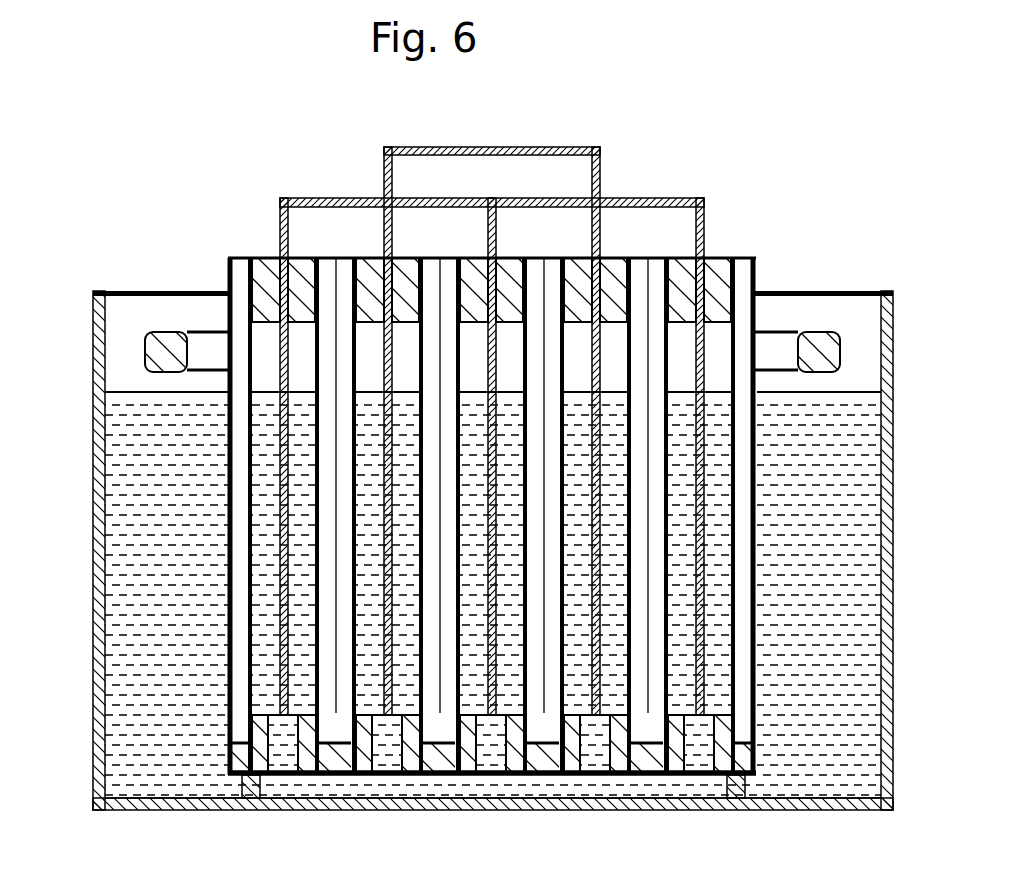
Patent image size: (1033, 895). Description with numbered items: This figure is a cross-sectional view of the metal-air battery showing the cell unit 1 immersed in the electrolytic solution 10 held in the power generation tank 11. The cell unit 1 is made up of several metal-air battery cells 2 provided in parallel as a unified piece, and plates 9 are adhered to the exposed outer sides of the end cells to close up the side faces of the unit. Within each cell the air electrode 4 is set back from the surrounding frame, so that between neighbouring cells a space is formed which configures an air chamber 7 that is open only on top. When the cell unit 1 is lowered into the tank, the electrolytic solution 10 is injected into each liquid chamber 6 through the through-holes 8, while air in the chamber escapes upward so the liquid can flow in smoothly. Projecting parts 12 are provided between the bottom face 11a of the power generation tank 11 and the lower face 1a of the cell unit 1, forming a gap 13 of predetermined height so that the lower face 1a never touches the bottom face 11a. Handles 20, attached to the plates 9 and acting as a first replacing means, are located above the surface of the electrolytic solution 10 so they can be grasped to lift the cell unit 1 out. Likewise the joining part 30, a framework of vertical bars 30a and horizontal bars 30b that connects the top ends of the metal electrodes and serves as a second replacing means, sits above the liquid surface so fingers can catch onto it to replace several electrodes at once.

The cell unit 1 is at (632, 245).
The lower face of the cell unit 1a is at (425, 775).
The metal-air battery cell 2 is at (272, 265).
The air electrode 4 is at (243, 265).
The liquid chamber 6 is at (268, 650).
The air chamber 7 is at (333, 270).
The through-hole 8 is at (285, 742).
The plate 9 is at (228, 300).
The electrolytic solution 10 is at (868, 570).
The power generation tank 11 is at (893, 500).
The bottom face of the power generation tank 11a is at (366, 798).
The projecting part 12 is at (243, 789).
The gap 13 is at (610, 790).
The handle 20 is at (155, 352).
The joining part 30 is at (610, 142).
The vertical bar 30a is at (591, 230).
The horizontal bar 30b is at (662, 198).